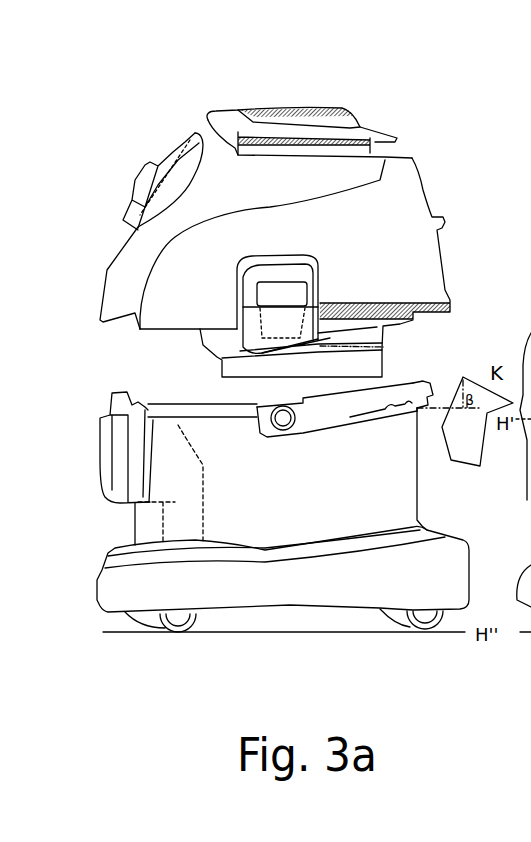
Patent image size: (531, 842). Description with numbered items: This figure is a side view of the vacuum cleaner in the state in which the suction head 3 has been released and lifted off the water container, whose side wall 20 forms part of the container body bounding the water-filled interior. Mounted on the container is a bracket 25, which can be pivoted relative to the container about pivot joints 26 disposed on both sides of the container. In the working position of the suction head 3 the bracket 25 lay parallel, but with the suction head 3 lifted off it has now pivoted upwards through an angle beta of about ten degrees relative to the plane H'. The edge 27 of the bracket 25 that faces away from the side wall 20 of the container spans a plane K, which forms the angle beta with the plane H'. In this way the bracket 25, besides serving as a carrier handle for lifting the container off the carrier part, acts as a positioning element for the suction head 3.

The suction head 3 is at (400, 171).
The side wall 20 is at (383, 477).
The bracket 25 is at (433, 379).
The pivot joints 26 is at (262, 418).
The edge 27 is at (398, 377).